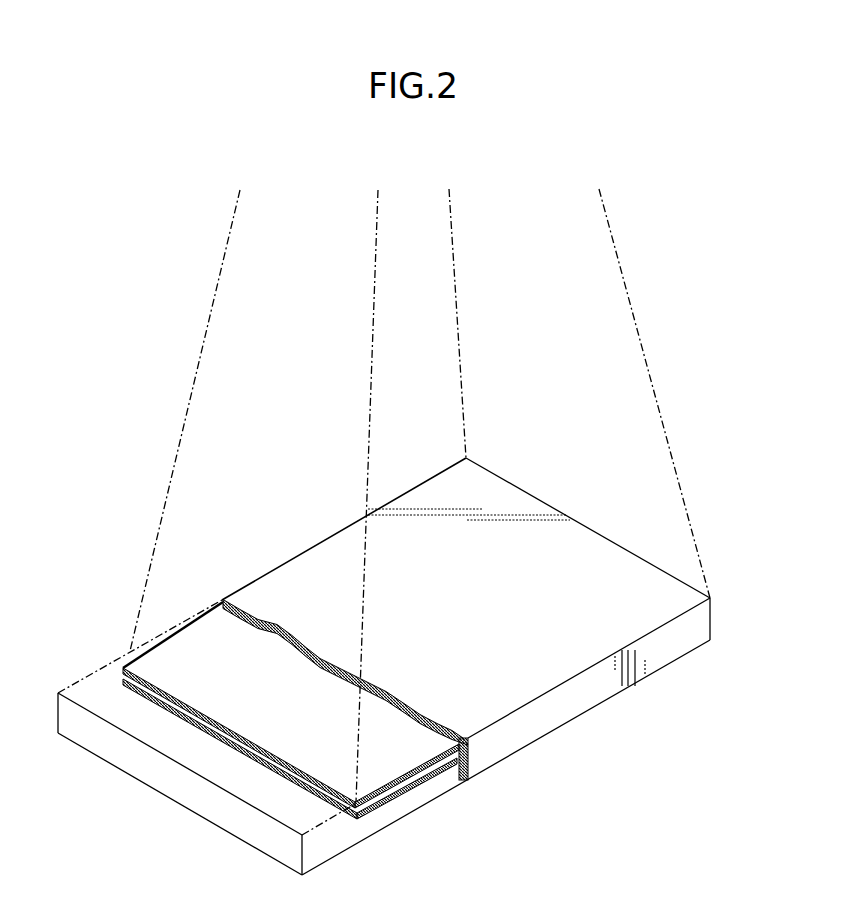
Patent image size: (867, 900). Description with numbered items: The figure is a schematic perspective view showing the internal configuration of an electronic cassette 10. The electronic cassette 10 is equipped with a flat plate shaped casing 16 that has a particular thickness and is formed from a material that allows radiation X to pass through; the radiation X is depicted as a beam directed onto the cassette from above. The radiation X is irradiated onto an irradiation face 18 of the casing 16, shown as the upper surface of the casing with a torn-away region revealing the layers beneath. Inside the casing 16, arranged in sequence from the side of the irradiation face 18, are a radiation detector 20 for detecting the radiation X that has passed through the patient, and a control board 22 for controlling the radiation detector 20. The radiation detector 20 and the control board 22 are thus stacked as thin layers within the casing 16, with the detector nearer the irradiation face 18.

The electronic cassette 10 is at (384, 532).
The radiation X is at (190, 398).
The casing 16 is at (533, 727).
The irradiation face 18 is at (570, 558).
The radiation detector 20 is at (386, 798).
The control board 22 is at (437, 776).